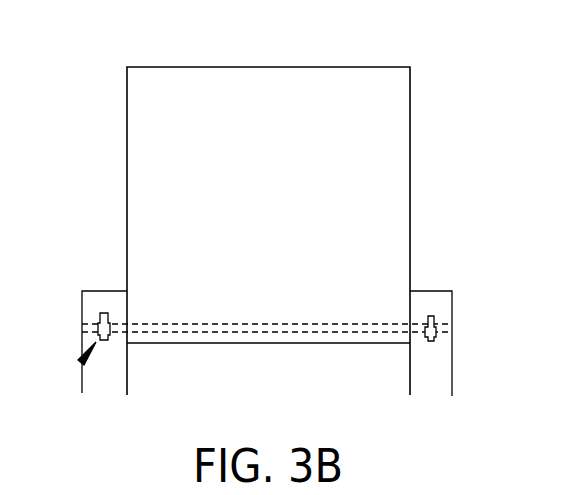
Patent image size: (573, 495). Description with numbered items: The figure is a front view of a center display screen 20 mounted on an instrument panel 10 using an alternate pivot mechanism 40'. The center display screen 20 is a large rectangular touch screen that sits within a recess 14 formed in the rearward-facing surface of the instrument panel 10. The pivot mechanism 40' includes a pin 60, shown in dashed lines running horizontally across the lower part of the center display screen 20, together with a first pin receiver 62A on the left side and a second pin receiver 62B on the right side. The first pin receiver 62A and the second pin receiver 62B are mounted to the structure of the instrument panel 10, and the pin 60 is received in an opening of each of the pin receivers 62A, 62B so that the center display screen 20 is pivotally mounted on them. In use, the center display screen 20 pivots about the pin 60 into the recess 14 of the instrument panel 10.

The center display screen 20 is at (269, 67).
The instrument panel 10 is at (106, 290).
The recess 14 is at (425, 297).
The pin 60 is at (323, 333).
The first pin receiver 62A is at (104, 313).
The second pin receiver 62B is at (432, 316).
The pivot mechanism 40' is at (57, 379).